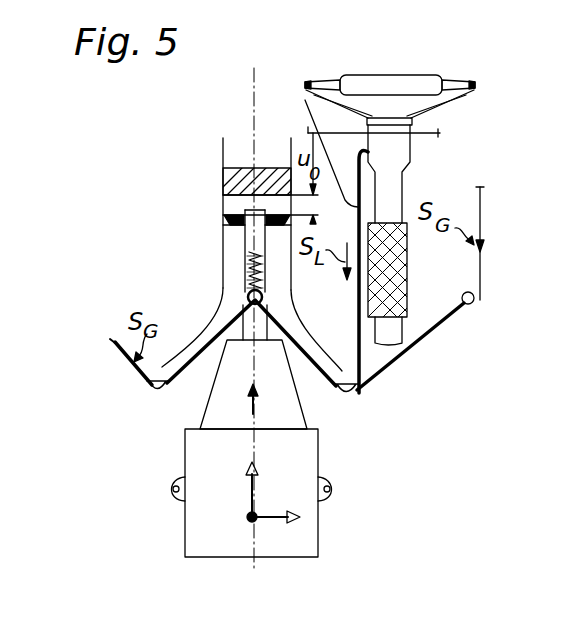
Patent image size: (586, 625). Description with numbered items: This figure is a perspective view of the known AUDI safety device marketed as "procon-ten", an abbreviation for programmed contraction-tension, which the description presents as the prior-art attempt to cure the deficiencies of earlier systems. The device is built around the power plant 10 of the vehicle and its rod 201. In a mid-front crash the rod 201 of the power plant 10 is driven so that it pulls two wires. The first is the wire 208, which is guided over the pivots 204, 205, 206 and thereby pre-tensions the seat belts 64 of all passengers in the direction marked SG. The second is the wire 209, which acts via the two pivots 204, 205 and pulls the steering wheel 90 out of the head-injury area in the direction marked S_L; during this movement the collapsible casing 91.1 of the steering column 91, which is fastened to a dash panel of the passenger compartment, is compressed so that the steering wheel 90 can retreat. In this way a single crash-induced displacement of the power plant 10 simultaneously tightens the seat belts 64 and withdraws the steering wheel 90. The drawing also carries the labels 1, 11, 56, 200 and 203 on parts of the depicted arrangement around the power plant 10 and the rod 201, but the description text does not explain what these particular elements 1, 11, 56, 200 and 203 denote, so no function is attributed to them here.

The coordinate measuring machine 1 is at (95, 100).
The seat belts 64 is at (103, 99).
The power plant 10 is at (251, 448).
The mounting clips 11 is at (172, 481).
The bell-shaped housing 56 is at (216, 276).
The steering wheel 90 is at (372, 80).
The steering column 91 is at (392, 138).
The collapsible casing 91.1 is at (402, 222).
The guide housing 200 is at (222, 168).
The rod 201 is at (224, 194).
The sealing disc 203 is at (224, 220).
The pivot 204 is at (246, 304).
The pivot 205 is at (152, 390).
The pivot 206 is at (476, 298).
The wire 208 is at (432, 342).
The wire 209 is at (305, 100).